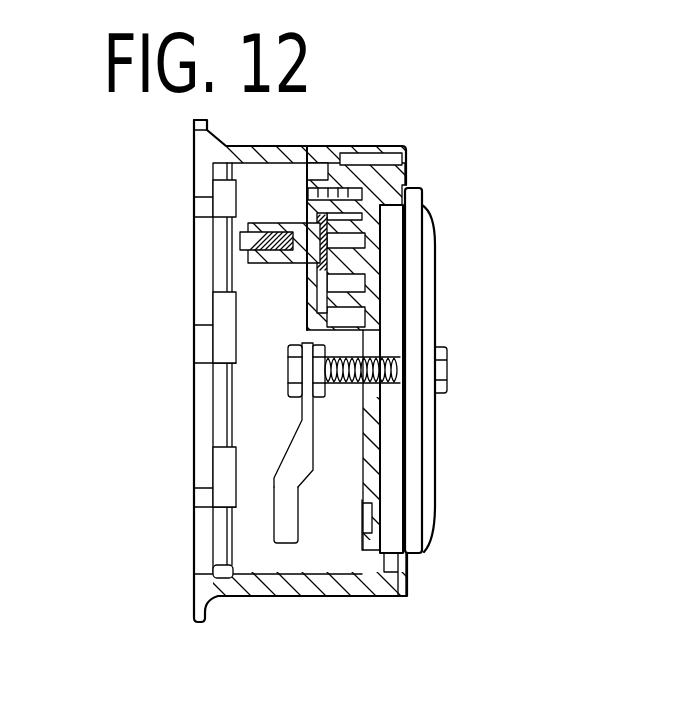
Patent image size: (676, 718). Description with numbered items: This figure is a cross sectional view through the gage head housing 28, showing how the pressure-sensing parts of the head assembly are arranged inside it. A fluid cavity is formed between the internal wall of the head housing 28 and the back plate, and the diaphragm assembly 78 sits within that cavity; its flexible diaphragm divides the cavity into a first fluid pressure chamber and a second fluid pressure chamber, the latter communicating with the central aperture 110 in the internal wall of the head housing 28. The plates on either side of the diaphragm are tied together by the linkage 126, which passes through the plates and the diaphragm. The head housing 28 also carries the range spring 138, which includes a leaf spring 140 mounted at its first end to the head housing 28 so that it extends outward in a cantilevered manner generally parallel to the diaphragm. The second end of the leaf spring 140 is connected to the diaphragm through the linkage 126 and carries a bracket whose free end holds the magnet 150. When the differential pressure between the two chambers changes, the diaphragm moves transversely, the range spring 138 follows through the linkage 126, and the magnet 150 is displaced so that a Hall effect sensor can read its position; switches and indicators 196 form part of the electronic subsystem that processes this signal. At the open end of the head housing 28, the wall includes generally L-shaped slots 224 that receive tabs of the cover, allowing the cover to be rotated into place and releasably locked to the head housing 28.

The gage head housing 28 is at (250, 600).
The diaphragm assembly 78 is at (434, 228).
The central aperture 110 is at (372, 402).
The linkage 126 is at (285, 372).
The range spring 138 is at (300, 296).
The leaf spring 140 is at (308, 320).
The magnet 150 is at (292, 527).
The switches and indicators 196 is at (292, 465).
The L-shaped slots 224 is at (229, 341).